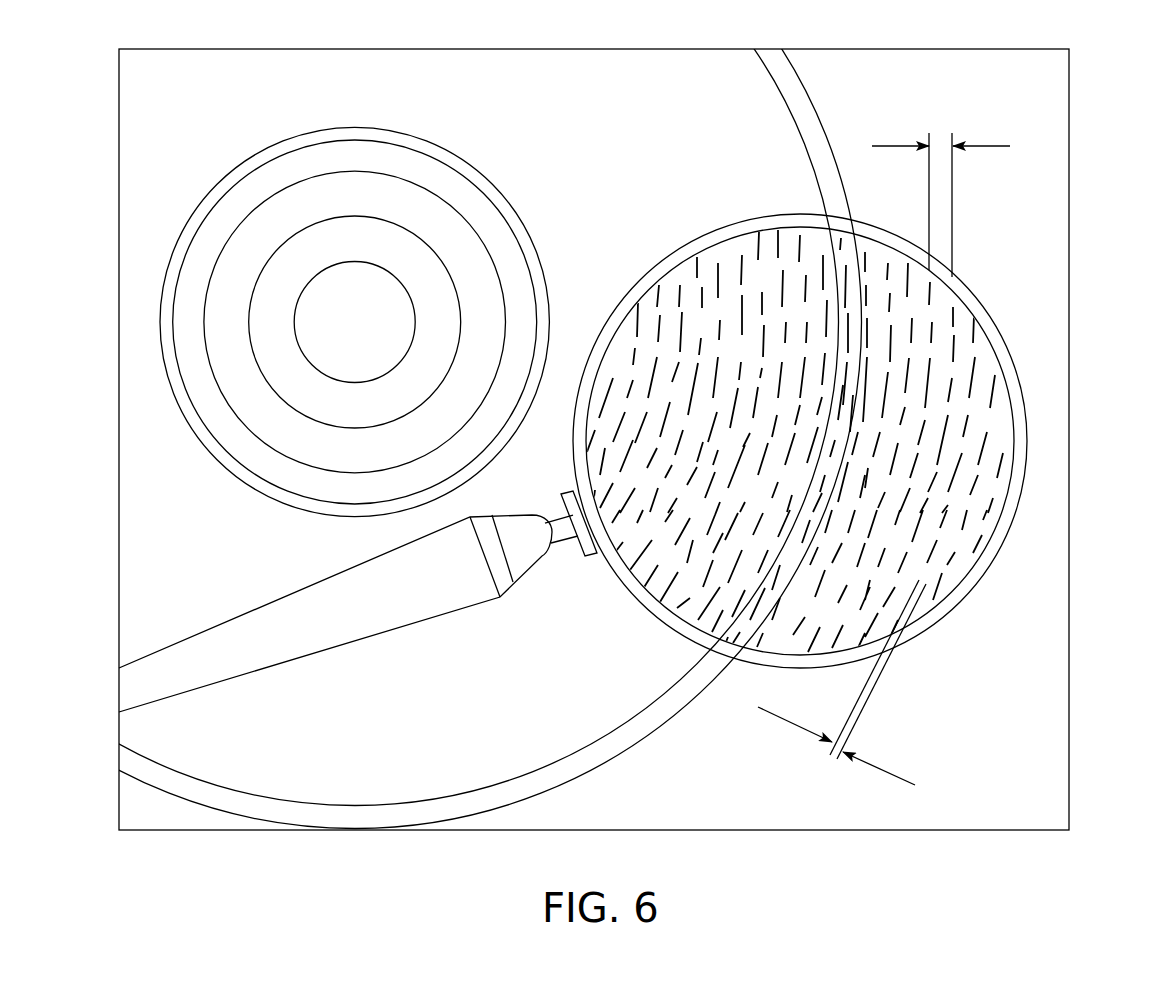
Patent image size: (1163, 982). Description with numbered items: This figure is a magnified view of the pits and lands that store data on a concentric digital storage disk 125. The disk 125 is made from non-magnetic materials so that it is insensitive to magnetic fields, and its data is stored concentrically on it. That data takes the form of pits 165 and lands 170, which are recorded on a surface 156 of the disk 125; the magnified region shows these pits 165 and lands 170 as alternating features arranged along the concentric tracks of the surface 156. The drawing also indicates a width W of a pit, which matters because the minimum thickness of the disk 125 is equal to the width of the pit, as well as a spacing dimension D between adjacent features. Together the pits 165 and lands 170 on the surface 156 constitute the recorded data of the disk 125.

The digital storage disk 125 is at (528, 89).
The surface 156 is at (995, 310).
The pits 165 is at (693, 303).
The lands 170 is at (757, 273).